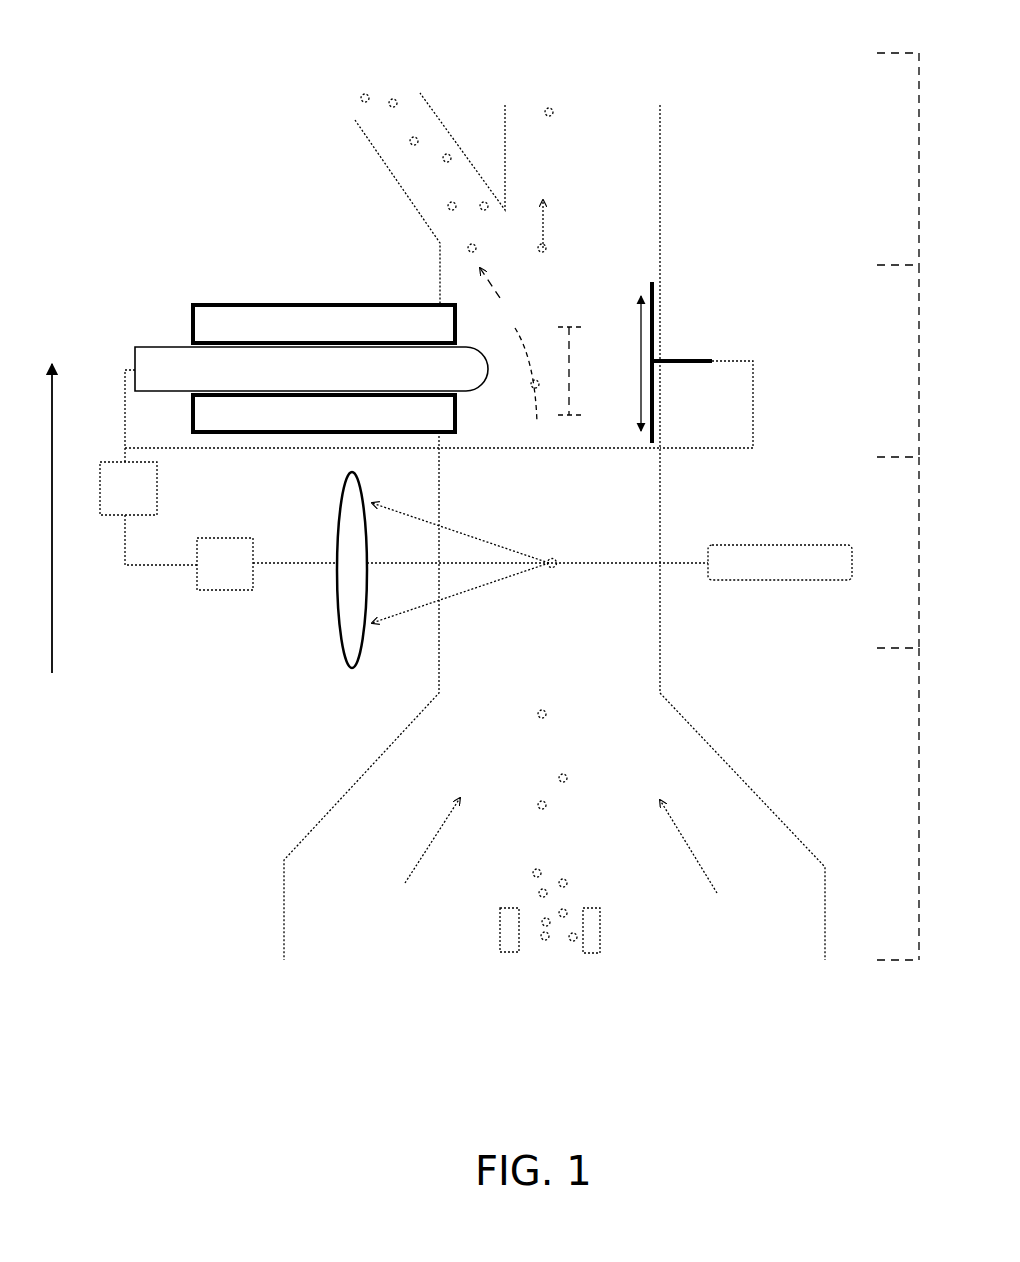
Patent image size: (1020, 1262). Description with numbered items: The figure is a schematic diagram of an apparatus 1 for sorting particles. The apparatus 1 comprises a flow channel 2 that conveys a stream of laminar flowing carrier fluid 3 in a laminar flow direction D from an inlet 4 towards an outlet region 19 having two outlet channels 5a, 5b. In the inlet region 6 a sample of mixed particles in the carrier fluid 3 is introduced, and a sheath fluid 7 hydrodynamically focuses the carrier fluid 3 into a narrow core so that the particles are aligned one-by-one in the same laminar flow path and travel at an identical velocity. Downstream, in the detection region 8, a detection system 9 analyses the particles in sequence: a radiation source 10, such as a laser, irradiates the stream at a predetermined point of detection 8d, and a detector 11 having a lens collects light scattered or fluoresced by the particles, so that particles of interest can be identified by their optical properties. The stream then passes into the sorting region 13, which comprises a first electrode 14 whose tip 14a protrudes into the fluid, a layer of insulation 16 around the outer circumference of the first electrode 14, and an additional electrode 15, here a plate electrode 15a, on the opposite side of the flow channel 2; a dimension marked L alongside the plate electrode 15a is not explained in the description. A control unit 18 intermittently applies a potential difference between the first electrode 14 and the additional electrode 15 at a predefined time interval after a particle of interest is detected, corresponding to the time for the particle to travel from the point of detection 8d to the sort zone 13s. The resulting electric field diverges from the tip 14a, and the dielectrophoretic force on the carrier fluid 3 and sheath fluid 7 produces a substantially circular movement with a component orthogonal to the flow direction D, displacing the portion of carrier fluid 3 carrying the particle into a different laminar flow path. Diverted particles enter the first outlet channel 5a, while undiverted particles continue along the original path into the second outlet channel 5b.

The apparatus 1 is at (215, 98).
The flow channel 2 is at (662, 650).
The carrier fluid 3 is at (556, 677).
The inlet 4 is at (455, 932).
The first outlet channel 5a is at (397, 80).
The second outlet channel 5b is at (600, 85).
The inlet region 6 is at (898, 804).
The sheath fluid 7 is at (409, 860).
The detection region 8 is at (898, 552).
The point of detection 8d is at (565, 575).
The detection system 9 is at (750, 515).
The radiation source 10 is at (810, 547).
The detector 11 is at (338, 613).
The sorting region 13 is at (240, 577).
The sort zone 13s is at (580, 371).
The first electrode 14 is at (160, 347).
The tip 14a is at (488, 372).
The additional electrode 15 is at (692, 360).
The plate electrode 15a is at (661, 278).
The layer of insulation 16 is at (236, 305).
The control unit 18 is at (144, 502).
The outlet region 19 is at (897, 159).
The laminar flow direction D is at (38, 518).
The substrate length L is at (629, 363).